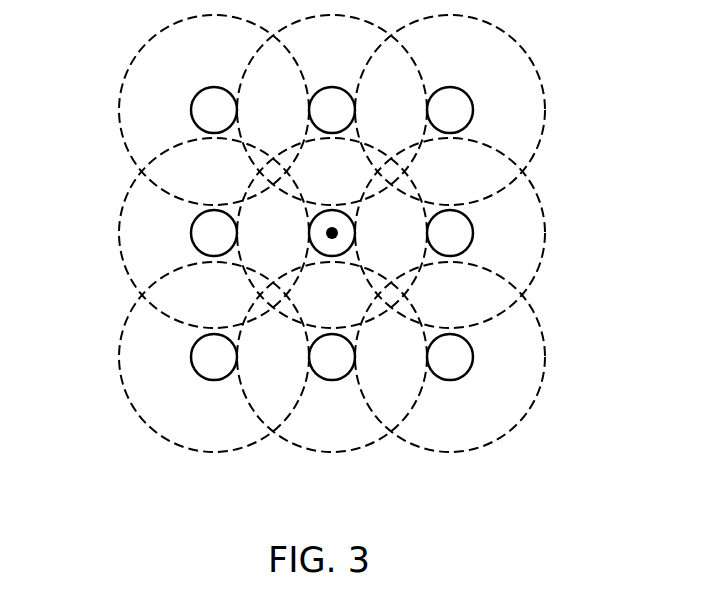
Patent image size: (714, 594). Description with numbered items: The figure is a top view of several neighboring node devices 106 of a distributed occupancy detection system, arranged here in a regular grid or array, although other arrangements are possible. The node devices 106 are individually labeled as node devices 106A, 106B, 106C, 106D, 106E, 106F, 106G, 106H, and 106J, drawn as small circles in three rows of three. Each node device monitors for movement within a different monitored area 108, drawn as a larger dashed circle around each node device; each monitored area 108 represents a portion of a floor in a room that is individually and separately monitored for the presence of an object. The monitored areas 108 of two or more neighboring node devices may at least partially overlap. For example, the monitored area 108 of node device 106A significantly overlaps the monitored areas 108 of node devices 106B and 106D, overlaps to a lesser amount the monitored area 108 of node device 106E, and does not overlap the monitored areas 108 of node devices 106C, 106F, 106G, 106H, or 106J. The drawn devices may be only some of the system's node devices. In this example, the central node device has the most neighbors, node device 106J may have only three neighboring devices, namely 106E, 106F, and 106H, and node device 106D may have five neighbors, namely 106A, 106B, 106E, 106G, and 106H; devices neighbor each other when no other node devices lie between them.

The node device 106 is at (180, 95).
The node device 106A is at (215, 87).
The node device 106B is at (333, 87).
The node device 106C is at (451, 87).
The node device 106D is at (190, 231).
The node device 106E is at (334, 210).
The node device 106F is at (474, 228).
The node device 106G is at (214, 381).
The node device 106H is at (332, 381).
The node device 106J is at (450, 381).
The monitored area 108 is at (546, 105).